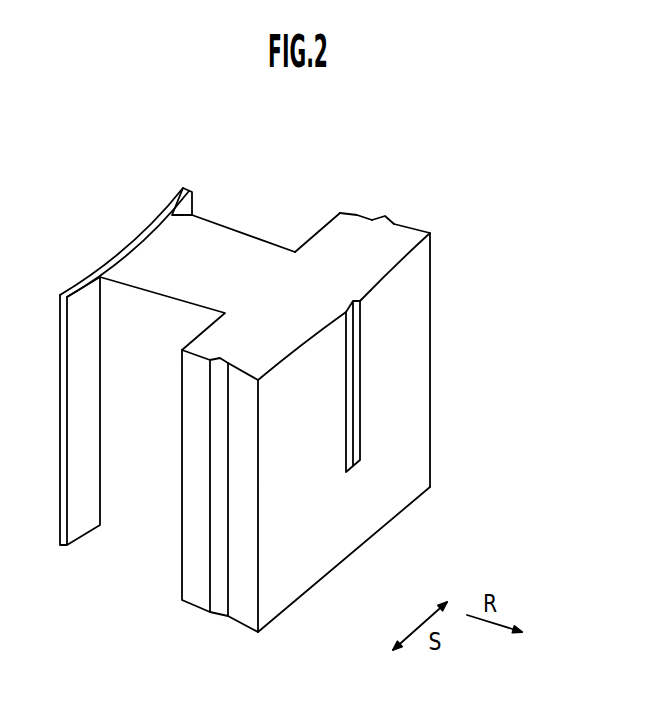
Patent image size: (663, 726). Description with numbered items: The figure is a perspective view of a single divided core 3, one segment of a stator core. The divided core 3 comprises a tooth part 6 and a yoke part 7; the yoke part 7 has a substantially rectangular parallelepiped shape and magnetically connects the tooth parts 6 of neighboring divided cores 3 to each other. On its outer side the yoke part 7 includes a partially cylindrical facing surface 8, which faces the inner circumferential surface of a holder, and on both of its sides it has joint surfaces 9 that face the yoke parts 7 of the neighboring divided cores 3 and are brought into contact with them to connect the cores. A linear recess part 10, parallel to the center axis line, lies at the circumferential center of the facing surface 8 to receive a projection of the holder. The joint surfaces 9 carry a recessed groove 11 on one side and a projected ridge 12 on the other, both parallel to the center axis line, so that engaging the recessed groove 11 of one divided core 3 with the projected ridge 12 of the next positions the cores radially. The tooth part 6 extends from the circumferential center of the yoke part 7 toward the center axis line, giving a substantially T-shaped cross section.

The divided core 3 is at (463, 168).
The tooth part 6 is at (233, 228).
The yoke part 7 is at (435, 277).
The facing surface 8 is at (410, 380).
The joint surfaces 9 is at (357, 215).
The recess part 10 is at (360, 462).
The recessed groove 11 is at (222, 500).
The projected ridge 12 is at (383, 217).